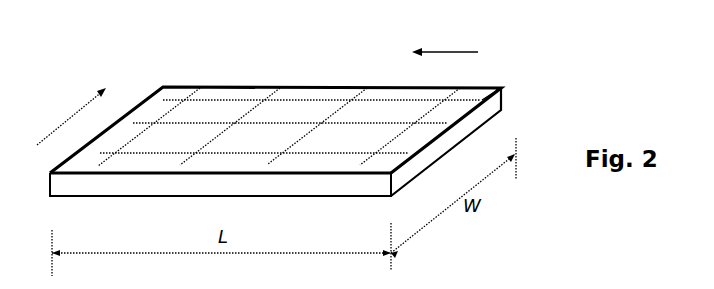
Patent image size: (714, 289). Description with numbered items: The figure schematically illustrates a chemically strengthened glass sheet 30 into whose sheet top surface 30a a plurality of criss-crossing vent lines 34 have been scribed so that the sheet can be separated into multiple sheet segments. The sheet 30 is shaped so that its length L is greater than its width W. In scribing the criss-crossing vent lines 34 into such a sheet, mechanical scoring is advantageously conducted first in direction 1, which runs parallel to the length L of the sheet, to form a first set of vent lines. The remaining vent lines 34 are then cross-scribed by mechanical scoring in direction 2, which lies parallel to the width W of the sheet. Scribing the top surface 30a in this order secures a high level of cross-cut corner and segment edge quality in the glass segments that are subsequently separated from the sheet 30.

The chemically strengthened glass sheet 30 is at (172, 64).
The sheet top surface 30a is at (475, 95).
The vent lines 34 is at (229, 155).
The direction 1 is at (445, 40).
The direction 2 is at (71, 116).